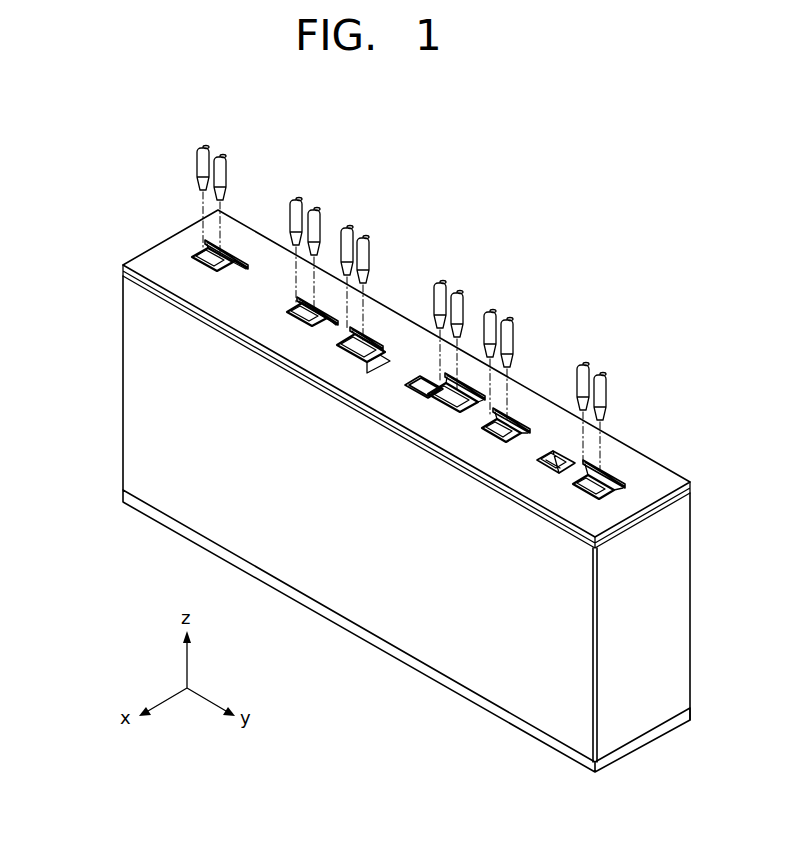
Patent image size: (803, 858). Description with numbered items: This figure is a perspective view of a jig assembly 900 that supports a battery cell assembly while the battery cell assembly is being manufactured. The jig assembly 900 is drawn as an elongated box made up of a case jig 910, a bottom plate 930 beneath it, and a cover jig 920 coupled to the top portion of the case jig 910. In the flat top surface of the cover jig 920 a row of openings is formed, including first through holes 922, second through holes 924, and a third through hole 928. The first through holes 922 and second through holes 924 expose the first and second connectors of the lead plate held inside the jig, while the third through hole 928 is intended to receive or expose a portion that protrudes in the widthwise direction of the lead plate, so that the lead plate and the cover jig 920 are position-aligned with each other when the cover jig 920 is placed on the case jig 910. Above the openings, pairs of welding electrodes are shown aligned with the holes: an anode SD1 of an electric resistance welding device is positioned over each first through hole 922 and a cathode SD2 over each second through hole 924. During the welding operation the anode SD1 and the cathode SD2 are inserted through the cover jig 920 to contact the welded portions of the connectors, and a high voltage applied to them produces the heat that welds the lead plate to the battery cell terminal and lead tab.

The jig assembly 900 is at (137, 217).
The case jig 910 is at (143, 413).
The cover jig 920 is at (123, 271).
The first through hole 922 is at (200, 262).
The second through hole 924 is at (293, 312).
The third through hole 928 is at (560, 447).
The bottom plate 930 is at (123, 497).
The anode SD1 is at (200, 150).
The cathode SD2 is at (225, 158).